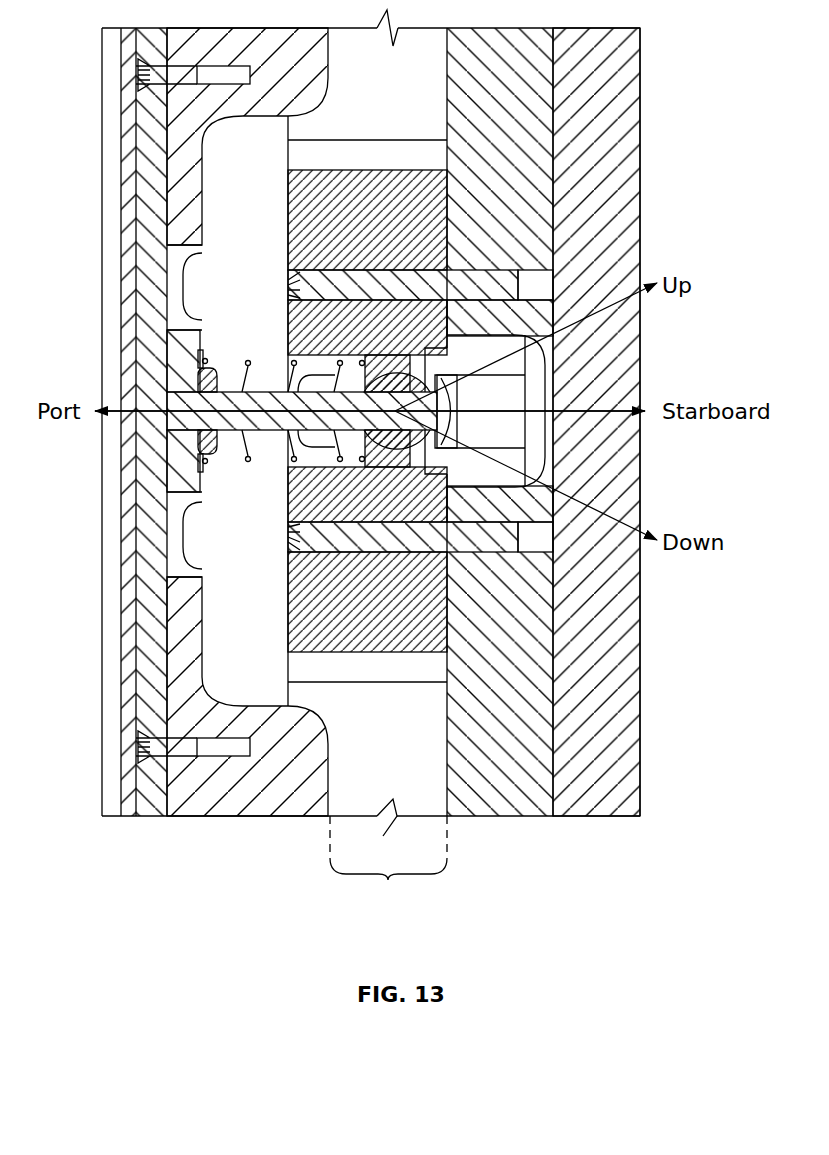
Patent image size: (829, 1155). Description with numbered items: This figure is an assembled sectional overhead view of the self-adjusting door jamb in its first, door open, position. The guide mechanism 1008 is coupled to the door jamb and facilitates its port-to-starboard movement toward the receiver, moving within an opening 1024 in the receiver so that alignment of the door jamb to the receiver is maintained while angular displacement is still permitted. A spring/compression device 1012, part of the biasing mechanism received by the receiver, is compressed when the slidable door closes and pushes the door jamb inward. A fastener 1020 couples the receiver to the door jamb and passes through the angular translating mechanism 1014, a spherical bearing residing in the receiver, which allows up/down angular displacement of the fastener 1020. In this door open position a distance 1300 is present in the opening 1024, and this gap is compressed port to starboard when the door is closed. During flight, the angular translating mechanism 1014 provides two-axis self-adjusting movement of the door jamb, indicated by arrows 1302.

The arrows 1302 is at (624, 53).
The guide mechanism 1008 is at (206, 802).
The spring/compression device 1012 is at (246, 354).
The angular translating mechanism 1014 is at (376, 364).
The fastener 1020 is at (259, 418).
The opening 1024 is at (350, 752).
The distance 1300 is at (388, 862).